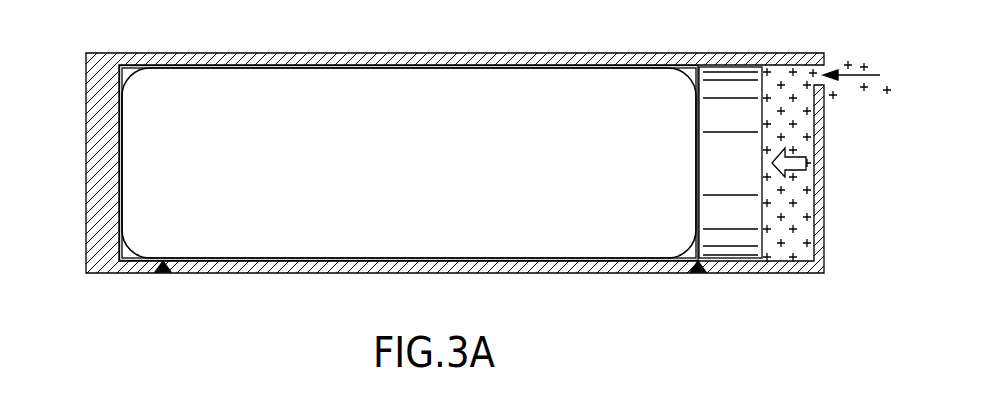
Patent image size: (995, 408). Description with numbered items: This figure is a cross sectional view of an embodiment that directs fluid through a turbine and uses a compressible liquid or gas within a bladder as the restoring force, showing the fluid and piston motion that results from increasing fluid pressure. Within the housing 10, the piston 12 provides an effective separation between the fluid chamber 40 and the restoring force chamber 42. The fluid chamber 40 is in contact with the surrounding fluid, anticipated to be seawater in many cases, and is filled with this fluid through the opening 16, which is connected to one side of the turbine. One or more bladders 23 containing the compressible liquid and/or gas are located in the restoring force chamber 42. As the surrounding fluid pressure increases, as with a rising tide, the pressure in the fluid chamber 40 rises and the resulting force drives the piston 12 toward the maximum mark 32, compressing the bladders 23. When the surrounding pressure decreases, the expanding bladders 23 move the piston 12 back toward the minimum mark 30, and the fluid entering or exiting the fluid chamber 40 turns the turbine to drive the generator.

The housing 10 is at (400, 53).
The piston 12 is at (721, 70).
The opening 16 is at (822, 80).
The bladder 23 is at (127, 214).
The minimum mark 30 is at (699, 274).
The maximum mark 32 is at (163, 274).
The fluid chamber 40 is at (778, 72).
The restoring force chamber 42 is at (125, 70).